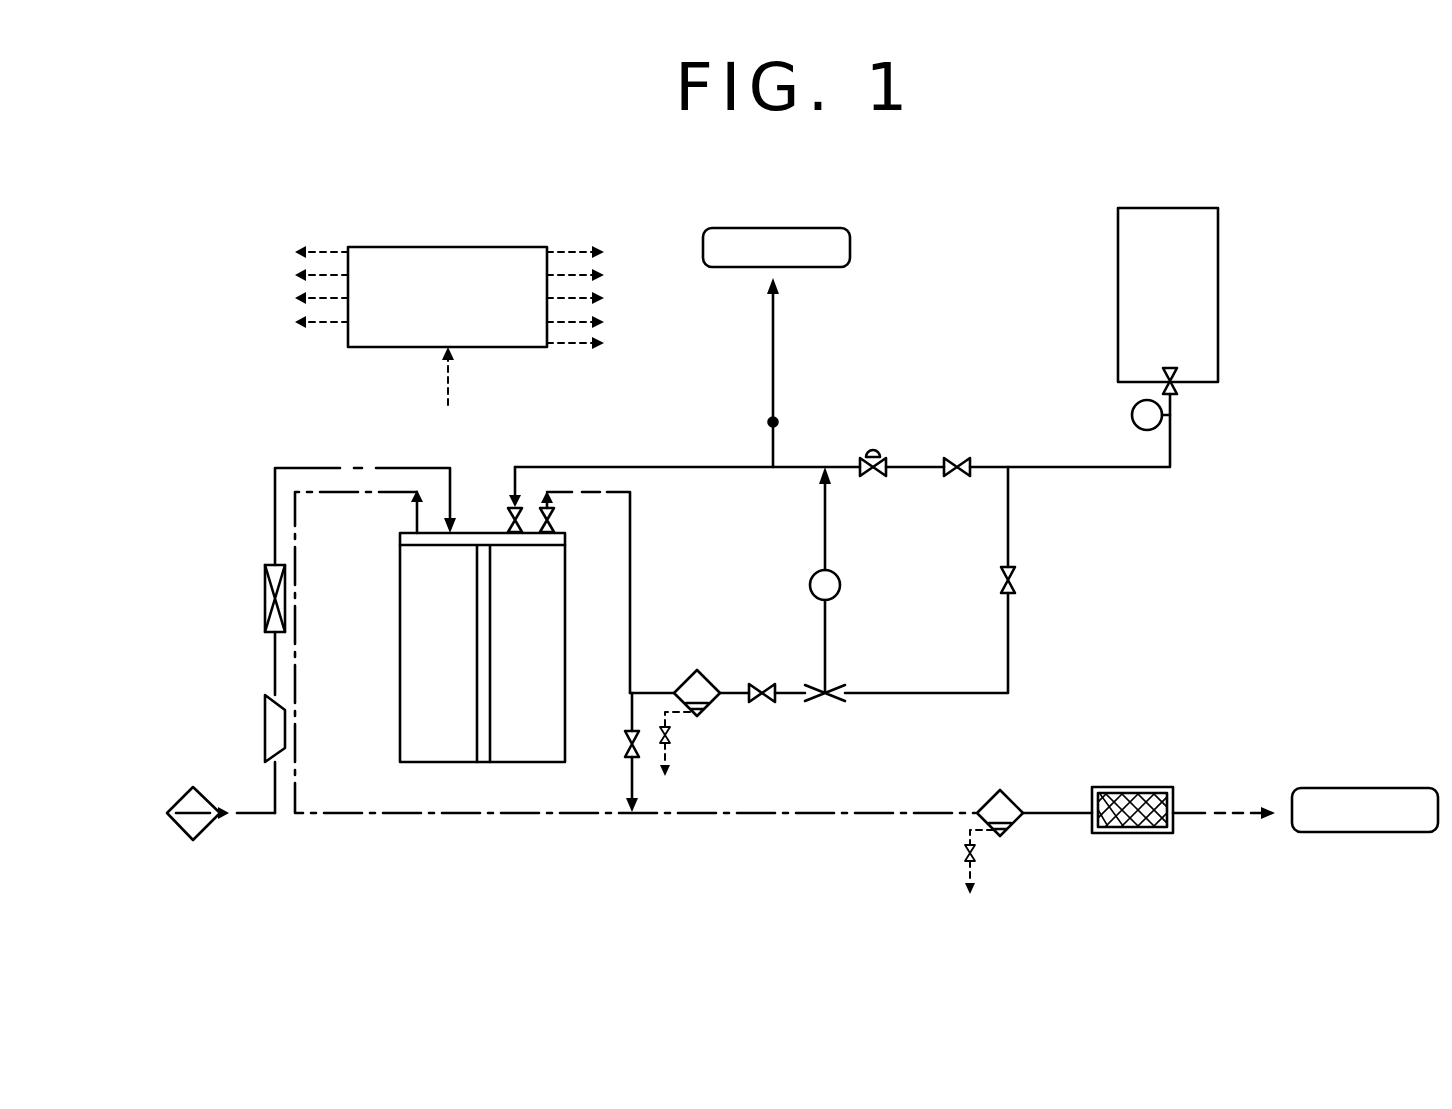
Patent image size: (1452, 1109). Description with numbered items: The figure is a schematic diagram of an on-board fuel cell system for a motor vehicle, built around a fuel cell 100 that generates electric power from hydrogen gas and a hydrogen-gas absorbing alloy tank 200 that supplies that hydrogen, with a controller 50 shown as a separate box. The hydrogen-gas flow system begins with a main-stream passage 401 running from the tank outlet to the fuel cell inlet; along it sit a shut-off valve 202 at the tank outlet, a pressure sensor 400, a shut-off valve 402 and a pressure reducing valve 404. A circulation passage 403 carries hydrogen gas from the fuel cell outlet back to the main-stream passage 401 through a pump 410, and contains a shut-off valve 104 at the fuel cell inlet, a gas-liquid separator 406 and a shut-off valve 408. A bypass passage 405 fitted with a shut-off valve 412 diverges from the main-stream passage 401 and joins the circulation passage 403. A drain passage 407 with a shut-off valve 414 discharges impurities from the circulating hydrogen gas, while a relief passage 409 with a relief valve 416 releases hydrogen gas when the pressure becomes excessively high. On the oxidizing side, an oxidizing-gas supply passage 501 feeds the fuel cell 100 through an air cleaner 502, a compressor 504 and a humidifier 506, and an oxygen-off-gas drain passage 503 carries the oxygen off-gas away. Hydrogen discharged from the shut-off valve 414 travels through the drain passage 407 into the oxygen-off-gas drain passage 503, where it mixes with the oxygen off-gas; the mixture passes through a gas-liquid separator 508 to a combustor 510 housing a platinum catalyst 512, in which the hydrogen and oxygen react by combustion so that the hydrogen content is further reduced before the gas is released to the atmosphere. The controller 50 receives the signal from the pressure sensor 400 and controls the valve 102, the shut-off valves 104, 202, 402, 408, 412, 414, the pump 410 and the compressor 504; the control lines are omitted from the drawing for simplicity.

The controller 50 is at (448, 247).
The fuel cell 100 is at (400, 727).
The valve 102 is at (511, 502).
The shut-off valve 104 is at (555, 518).
The hydrogen-gas absorbing alloy tank 200 is at (1220, 292).
The shut-off valve 202 is at (1178, 388).
The pressure sensor 400 is at (1132, 415).
The main-stream passage 401 is at (1105, 470).
The shut-off valve 402 is at (953, 450).
The circulation passage 403 is at (828, 628).
The pressure reducing valve 404 is at (873, 449).
The bypass passage 405 is at (1012, 655).
The gas-liquid separator 406 is at (684, 674).
The drain passage 407 is at (635, 785).
The shut-off valve 408 is at (758, 684).
The relief passage 409 is at (776, 325).
The pump 410 is at (839, 574).
The shut-off valve 412 is at (1020, 590).
The shut-off valve 414 is at (625, 745).
The relief valve 416 is at (766, 422).
The oxidizing-gas supply passage 501 is at (273, 513).
The air cleaner 502 is at (178, 838).
The oxygen-off-gas drain passage 503 is at (350, 815).
The compressor 504 is at (265, 718).
The humidifier 506 is at (265, 592).
The gas-liquid separator 508 is at (985, 798).
The combustor 510 is at (1120, 787).
The platinum catalyst 512 is at (1125, 833).